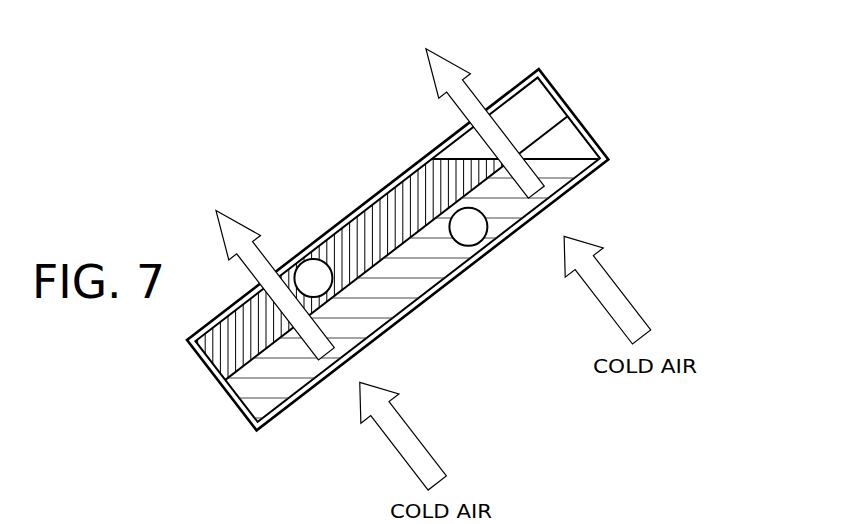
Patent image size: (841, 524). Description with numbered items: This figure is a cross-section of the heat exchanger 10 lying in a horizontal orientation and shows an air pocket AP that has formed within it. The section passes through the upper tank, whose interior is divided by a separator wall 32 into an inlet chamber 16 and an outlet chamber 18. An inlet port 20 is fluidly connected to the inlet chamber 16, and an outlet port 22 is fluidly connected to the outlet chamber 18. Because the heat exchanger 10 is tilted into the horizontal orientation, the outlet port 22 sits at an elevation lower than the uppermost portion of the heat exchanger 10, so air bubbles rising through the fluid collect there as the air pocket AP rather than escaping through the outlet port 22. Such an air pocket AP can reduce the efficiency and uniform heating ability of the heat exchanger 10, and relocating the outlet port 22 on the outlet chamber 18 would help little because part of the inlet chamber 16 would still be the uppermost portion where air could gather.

The heat exchanger 10 is at (578, 66).
The inlet chamber 16 is at (408, 183).
The outlet chamber 18 is at (403, 298).
The inlet port 20 is at (312, 276).
The outlet port 22 is at (469, 229).
The separator wall 32 is at (243, 380).
The air pocket AP is at (530, 118).